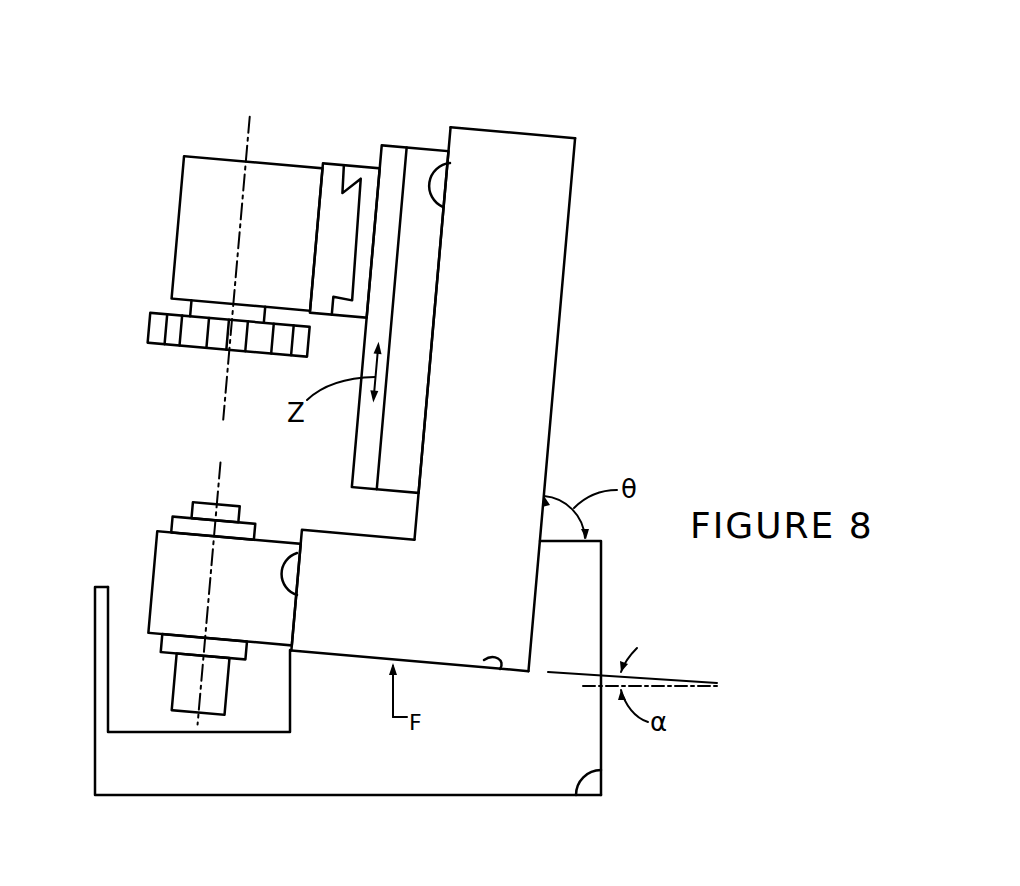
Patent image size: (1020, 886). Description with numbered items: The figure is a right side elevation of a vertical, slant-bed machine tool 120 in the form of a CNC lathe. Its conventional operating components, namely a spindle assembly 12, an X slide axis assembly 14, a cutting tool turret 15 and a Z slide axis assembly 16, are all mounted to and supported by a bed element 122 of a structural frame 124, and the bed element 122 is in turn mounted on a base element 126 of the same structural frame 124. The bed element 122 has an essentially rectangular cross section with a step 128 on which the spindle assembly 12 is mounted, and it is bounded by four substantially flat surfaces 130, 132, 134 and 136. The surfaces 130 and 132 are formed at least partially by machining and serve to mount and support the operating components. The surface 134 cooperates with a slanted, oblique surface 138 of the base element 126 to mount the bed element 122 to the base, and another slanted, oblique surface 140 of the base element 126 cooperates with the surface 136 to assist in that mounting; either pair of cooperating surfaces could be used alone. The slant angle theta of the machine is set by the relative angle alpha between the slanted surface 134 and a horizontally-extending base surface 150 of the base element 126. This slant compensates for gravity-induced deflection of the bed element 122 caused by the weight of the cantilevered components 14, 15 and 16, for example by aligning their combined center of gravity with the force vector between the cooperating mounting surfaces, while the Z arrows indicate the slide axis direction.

The spindle assembly 12 is at (162, 540).
The X slide axis assembly 14 is at (333, 172).
The cutting tool turret 15 is at (152, 313).
The Z slide axis assembly 16 is at (415, 155).
The vertical, slant-bed machine tool 120 is at (480, 66).
The bed element 122 is at (564, 146).
The structural frame 124 is at (582, 432).
The base element 126 is at (339, 776).
The step 128 is at (336, 540).
The surface 130 is at (443, 207).
The surface 132 is at (297, 595).
The surface 134 is at (442, 665).
The surface 136 is at (564, 287).
The slanted, oblique surface 138 is at (484, 660).
The slanted, oblique surface 140 is at (546, 576).
The horizontally-extending base surface 150 is at (601, 770).